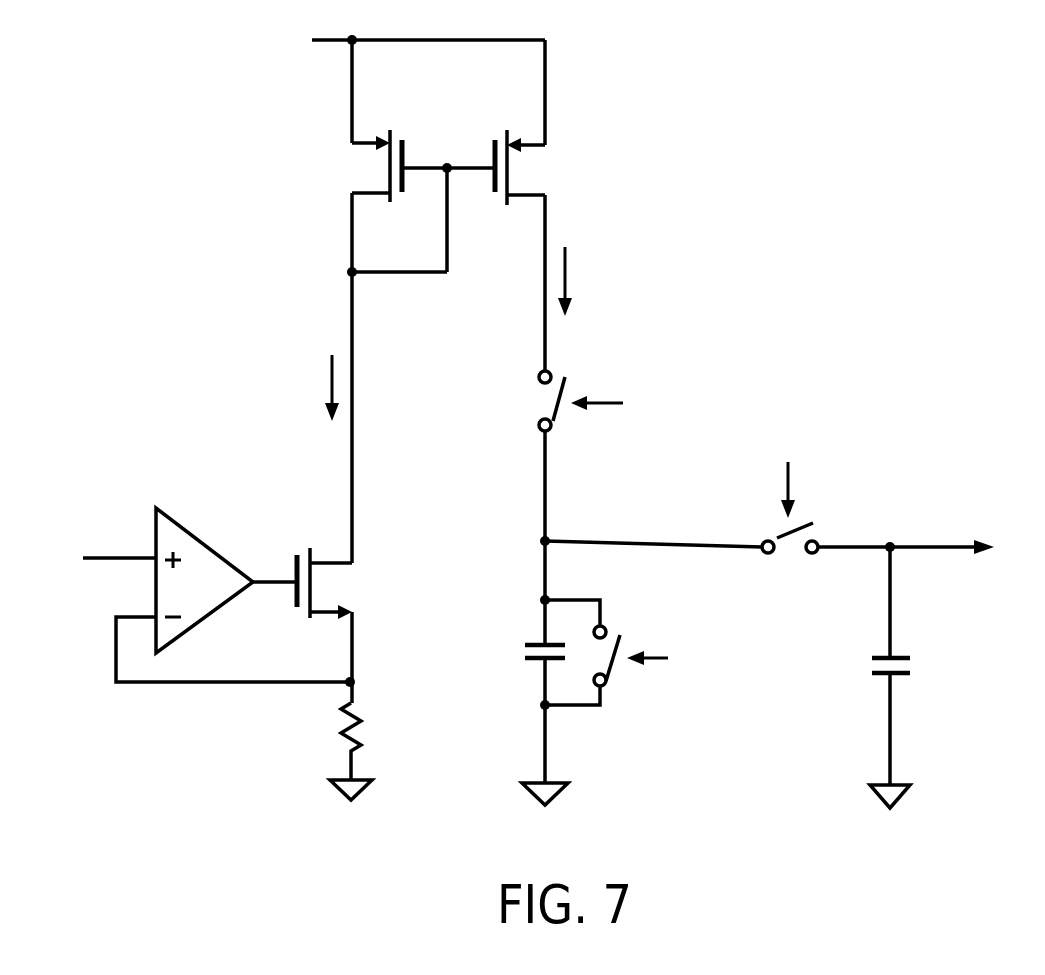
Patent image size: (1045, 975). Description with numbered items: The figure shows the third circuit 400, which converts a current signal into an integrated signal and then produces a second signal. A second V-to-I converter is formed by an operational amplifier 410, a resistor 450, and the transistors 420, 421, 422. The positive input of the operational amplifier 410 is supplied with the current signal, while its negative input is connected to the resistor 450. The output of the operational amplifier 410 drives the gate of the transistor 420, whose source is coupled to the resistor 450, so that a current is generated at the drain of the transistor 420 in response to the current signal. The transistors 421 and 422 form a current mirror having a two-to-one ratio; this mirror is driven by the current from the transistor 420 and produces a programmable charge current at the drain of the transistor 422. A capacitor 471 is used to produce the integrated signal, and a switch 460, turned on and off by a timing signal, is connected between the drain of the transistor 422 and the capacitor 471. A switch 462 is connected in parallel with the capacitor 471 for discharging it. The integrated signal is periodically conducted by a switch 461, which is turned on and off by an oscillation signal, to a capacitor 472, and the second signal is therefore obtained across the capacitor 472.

The third circuit 400 is at (997, 90).
The operational amplifier 410 is at (210, 542).
The transistor 420 is at (353, 587).
The transistor 421 is at (350, 167).
The transistor 422 is at (550, 173).
The resistor 450 is at (368, 732).
The switch 460 is at (527, 402).
The switch 461 is at (790, 560).
The switch 462 is at (613, 690).
The capacitor 471 is at (520, 653).
The capacitor 472 is at (913, 667).